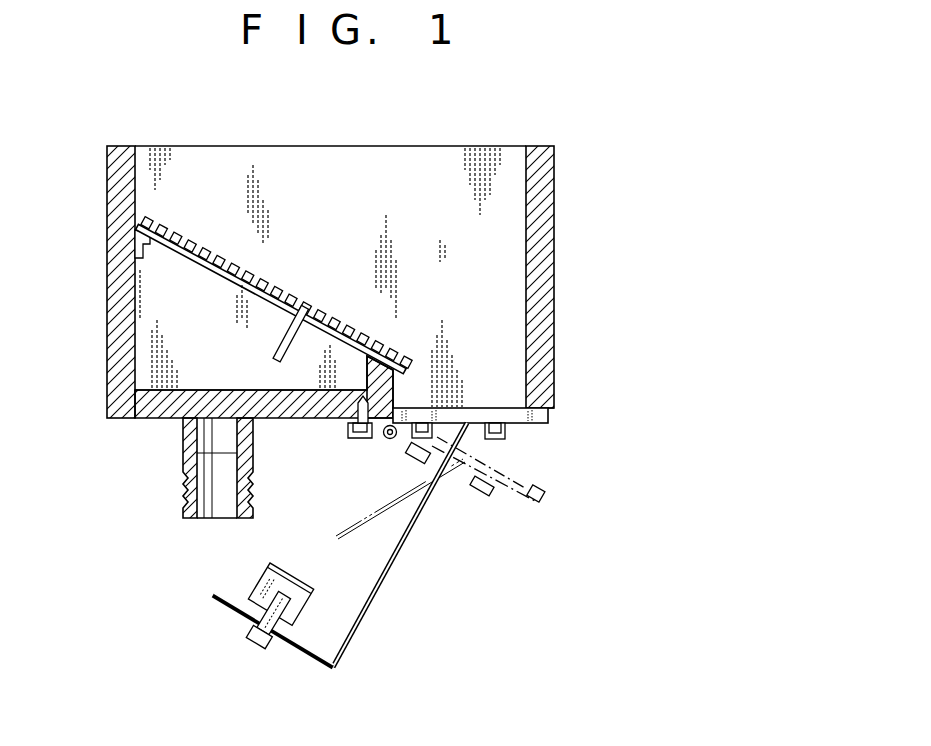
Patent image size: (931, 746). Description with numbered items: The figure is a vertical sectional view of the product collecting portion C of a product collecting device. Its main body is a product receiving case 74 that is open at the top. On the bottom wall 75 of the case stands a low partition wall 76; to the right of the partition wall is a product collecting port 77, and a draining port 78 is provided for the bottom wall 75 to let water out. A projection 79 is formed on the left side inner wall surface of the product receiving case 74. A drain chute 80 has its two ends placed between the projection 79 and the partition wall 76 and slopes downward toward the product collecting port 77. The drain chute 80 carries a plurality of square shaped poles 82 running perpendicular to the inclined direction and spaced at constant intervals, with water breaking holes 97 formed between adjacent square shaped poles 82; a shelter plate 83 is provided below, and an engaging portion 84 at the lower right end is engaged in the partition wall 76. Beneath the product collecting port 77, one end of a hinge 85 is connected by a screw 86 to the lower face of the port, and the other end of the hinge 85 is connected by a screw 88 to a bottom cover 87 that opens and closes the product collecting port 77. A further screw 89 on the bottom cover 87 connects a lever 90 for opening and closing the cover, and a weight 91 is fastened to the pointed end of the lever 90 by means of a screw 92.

The product receiving case 74 is at (532, 215).
The bottom wall 75 is at (305, 418).
The partition wall 76 is at (394, 383).
The product collecting port 77 is at (521, 390).
The draining port 78 is at (237, 453).
The projection 79 is at (107, 298).
The drain chute 80 is at (266, 290).
The square shaped poles 82 is at (225, 275).
The shelter plate 83 is at (282, 342).
The engaging portion 84 is at (190, 392).
The hinge 85 is at (390, 441).
The screw 86 is at (360, 439).
The bottom cover 87 is at (538, 427).
The screw 88 is at (431, 420).
The screw 89 is at (499, 438).
The lever 90 is at (428, 540).
The weight 91 is at (307, 633).
The screw 92 is at (262, 640).
The water breaking holes 97 is at (183, 242).
The product collecting portion C is at (594, 139).